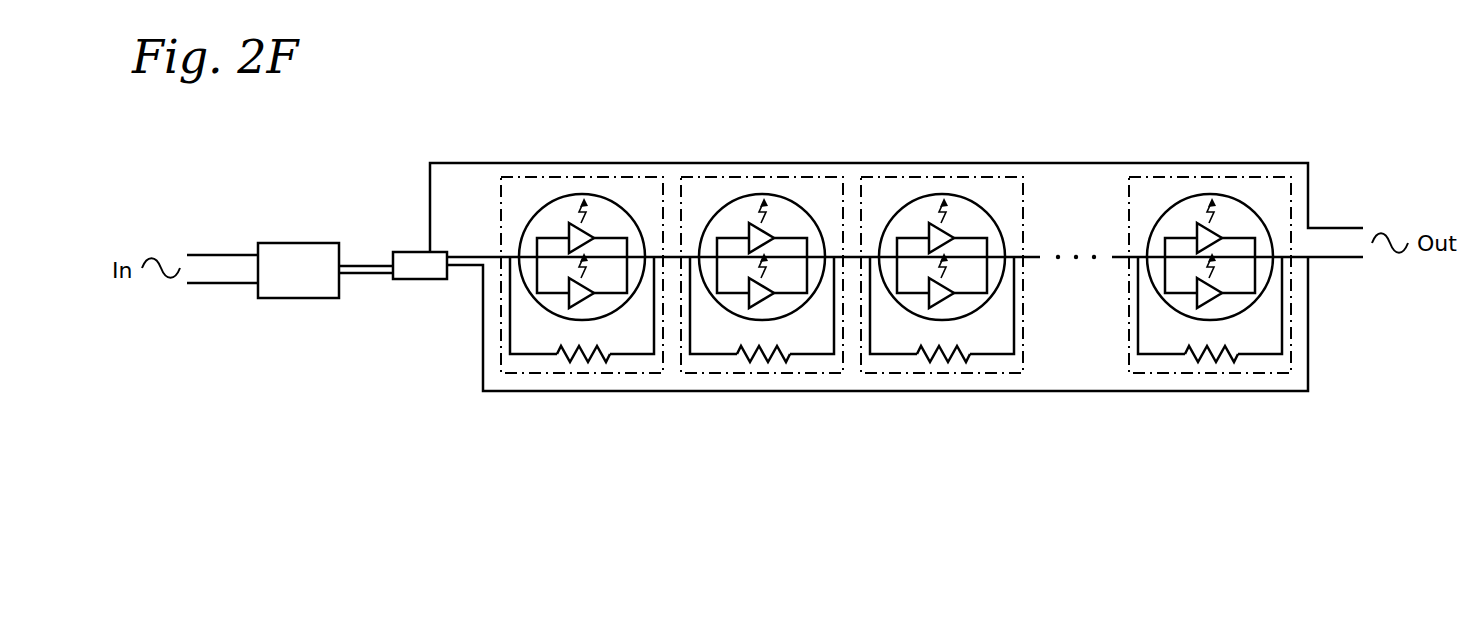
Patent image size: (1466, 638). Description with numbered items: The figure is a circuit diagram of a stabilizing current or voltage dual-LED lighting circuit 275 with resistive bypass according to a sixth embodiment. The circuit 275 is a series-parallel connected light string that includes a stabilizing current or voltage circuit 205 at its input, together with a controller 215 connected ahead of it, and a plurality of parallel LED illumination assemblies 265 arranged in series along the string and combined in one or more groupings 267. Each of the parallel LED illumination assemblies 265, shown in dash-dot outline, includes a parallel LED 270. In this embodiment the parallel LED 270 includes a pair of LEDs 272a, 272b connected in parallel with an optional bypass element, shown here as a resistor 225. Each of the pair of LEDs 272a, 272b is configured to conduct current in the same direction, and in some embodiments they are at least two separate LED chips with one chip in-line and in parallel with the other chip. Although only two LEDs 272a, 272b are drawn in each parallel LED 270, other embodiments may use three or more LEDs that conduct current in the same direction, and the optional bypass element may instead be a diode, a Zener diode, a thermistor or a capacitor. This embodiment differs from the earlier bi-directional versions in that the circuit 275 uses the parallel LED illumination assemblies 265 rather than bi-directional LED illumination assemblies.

The controller 215 is at (300, 243).
The stabilizing current or voltage circuit 205 is at (417, 252).
The stabilizing current or voltage dual-LED lighting circuit 275 is at (1332, 134).
The parallel LED illumination assembly 265 is at (582, 173).
The parallel LED 270 is at (548, 202).
The LED 272a is at (592, 237).
The LED 272b is at (568, 300).
The resistor 225 is at (585, 360).
The grouping 267 is at (595, 373).